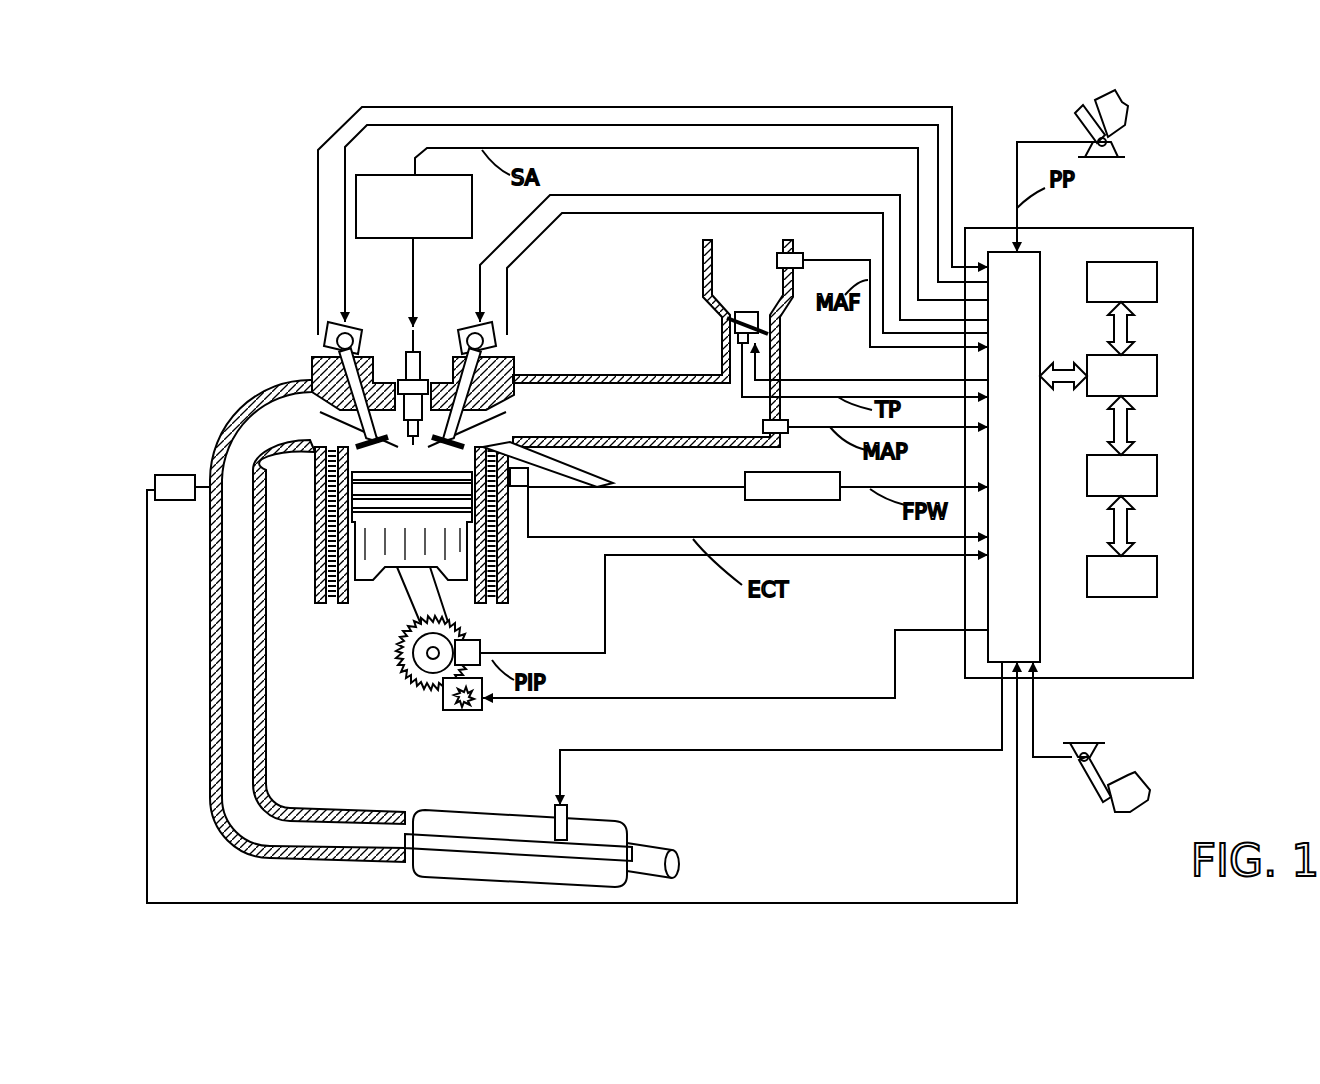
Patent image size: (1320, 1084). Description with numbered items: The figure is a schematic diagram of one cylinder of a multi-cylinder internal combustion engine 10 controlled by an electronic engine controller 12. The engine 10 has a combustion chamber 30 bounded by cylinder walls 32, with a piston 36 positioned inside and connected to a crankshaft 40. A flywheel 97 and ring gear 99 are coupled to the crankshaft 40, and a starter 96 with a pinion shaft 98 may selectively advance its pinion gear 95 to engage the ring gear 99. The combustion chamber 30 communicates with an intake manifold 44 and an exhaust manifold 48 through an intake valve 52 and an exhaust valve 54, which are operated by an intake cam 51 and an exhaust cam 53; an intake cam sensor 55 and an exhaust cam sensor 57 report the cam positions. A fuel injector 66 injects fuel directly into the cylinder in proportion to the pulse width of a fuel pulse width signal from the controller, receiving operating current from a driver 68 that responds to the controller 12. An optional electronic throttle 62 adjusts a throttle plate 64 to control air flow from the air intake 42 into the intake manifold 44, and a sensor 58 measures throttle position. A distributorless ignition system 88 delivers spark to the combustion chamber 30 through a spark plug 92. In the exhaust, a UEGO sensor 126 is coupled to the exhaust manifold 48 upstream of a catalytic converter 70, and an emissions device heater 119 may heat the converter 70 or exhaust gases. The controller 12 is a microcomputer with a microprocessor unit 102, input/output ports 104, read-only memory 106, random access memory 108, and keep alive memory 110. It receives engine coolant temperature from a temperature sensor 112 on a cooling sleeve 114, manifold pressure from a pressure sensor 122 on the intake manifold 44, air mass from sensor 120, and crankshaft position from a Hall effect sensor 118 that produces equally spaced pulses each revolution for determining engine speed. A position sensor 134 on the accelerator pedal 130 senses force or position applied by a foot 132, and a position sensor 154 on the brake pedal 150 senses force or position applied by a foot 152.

The internal combustion engine 10 is at (248, 312).
The electronic engine controller 12 is at (1190, 228).
The combustion chamber 30 is at (412, 457).
The cylinder walls 32 is at (380, 580).
The piston 36 is at (400, 572).
The crankshaft 40 is at (425, 675).
The air intake 42 is at (736, 287).
The intake manifold 44 is at (671, 424).
The exhaust manifold 48 is at (295, 427).
The intake cam 51 is at (465, 322).
The intake valve 52 is at (465, 425).
The exhaust cam 53 is at (356, 322).
The exhaust valve 54 is at (312, 398).
The intake cam sensor 55 is at (492, 350).
The exhaust cam sensor 57 is at (330, 338).
The throttle position sensor 58 is at (737, 338).
The electronic throttle 62 is at (776, 320).
The throttle plate 64 is at (723, 320).
The fuel injector 66 is at (545, 472).
The driver 68 is at (770, 500).
The catalytic converter 70 is at (430, 812).
The distributorless ignition system 88 is at (363, 178).
The spark plug 92 is at (418, 350).
The pinion gear 95 is at (466, 712).
The starter 96 is at (480, 710).
The flywheel 97 is at (410, 650).
The pinion shaft 98 is at (460, 708).
The ring gear 99 is at (432, 690).
The microprocessor unit 102 is at (1157, 388).
The input/output ports 104 is at (1040, 262).
The read-only memory 106 is at (1157, 292).
The random access memory 108 is at (1157, 490).
The keep alive memory 110 is at (1157, 590).
The temperature sensor 112 is at (528, 480).
The cooling sleeve 114 is at (497, 558).
The Hall effect sensor 118 is at (480, 642).
The emissions device heater 119 is at (570, 805).
The air mass sensor 120 is at (797, 253).
The pressure sensor 122 is at (790, 434).
The Universal Exhaust Gas Oxygen sensor 126 is at (155, 480).
The accelerator pedal 130 is at (1083, 118).
The foot 132 is at (1130, 104).
The position sensor 134 is at (1115, 148).
The brake pedal 150 is at (1106, 800).
The foot 152 is at (1142, 778).
The position sensor 154 is at (1075, 755).